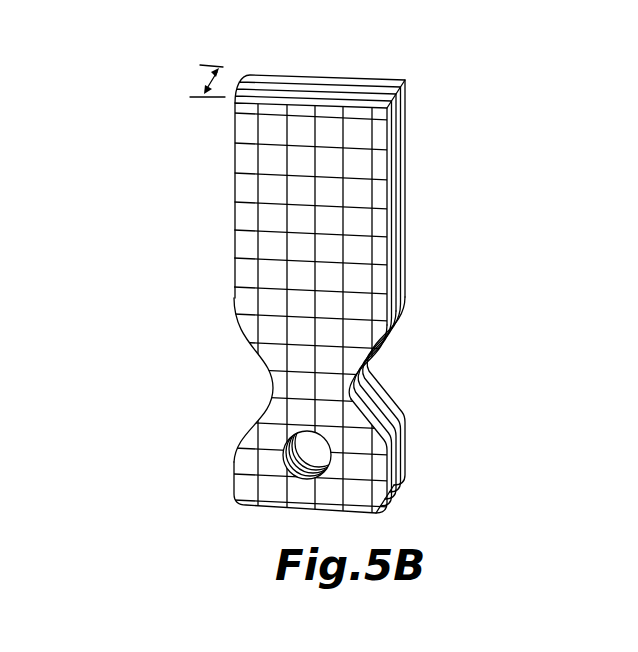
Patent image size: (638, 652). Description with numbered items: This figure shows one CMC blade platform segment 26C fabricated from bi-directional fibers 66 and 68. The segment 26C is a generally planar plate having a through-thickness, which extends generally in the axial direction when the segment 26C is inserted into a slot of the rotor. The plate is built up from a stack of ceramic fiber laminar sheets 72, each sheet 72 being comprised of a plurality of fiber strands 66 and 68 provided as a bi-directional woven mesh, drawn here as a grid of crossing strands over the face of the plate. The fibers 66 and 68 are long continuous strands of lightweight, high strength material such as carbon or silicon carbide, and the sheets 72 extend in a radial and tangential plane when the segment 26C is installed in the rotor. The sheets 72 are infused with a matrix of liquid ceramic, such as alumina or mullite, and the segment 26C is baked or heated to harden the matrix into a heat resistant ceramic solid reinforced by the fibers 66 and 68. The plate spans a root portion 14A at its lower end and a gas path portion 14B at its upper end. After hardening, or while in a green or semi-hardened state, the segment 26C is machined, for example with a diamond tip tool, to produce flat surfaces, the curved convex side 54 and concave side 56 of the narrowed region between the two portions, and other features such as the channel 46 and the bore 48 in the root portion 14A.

The CMC blade platform segment 26C is at (434, 111).
The sheet 72 is at (259, 72).
The gas path portion 14B is at (198, 240).
The concave side 56 is at (400, 297).
The convex side 54 is at (235, 300).
The channel 46 is at (352, 398).
The root portion 14A is at (202, 466).
The bore 48 is at (287, 452).
The fiber strands 66 is at (284, 137).
The fiber strands 68 is at (243, 203).